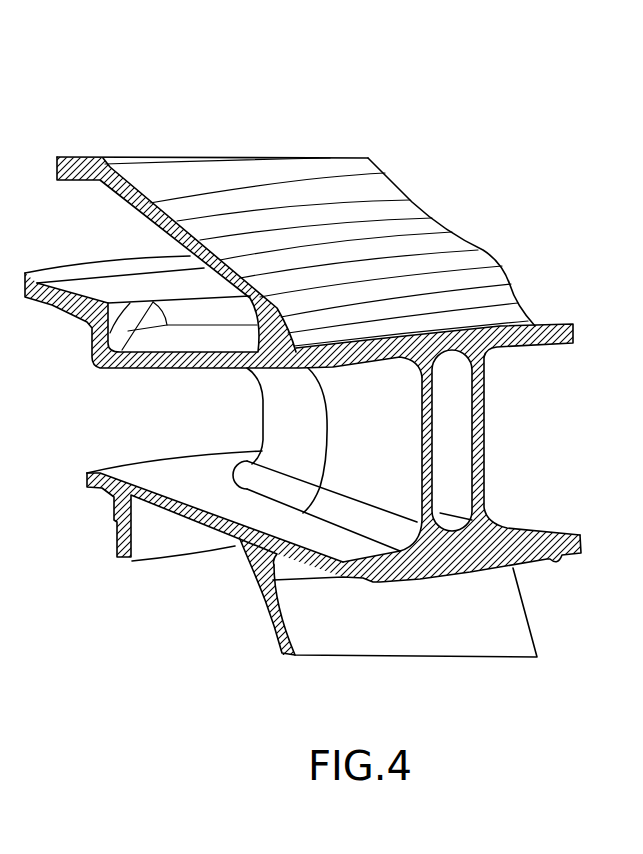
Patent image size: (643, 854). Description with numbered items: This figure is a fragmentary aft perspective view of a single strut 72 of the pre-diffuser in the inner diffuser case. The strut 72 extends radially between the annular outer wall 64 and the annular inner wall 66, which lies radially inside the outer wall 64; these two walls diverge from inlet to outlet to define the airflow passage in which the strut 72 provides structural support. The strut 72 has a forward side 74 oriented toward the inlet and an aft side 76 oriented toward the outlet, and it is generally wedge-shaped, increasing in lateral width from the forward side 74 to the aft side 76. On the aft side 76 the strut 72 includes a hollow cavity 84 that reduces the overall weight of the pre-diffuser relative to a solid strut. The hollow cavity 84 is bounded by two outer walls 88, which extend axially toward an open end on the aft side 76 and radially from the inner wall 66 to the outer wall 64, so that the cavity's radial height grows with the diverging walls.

The outer wall 64 is at (553, 322).
The inner wall 66 is at (555, 560).
The strut 72 is at (296, 428).
The forward side 74 is at (260, 410).
The aft side 76 is at (486, 433).
The hollow cavity 84 is at (452, 462).
The outer walls 88 is at (483, 392).